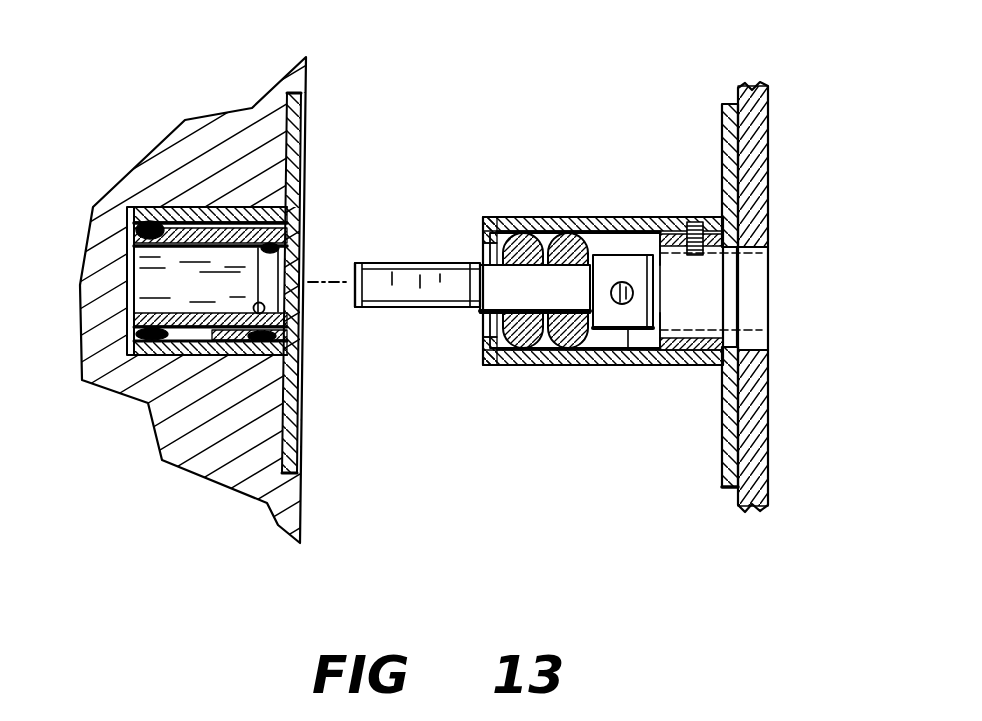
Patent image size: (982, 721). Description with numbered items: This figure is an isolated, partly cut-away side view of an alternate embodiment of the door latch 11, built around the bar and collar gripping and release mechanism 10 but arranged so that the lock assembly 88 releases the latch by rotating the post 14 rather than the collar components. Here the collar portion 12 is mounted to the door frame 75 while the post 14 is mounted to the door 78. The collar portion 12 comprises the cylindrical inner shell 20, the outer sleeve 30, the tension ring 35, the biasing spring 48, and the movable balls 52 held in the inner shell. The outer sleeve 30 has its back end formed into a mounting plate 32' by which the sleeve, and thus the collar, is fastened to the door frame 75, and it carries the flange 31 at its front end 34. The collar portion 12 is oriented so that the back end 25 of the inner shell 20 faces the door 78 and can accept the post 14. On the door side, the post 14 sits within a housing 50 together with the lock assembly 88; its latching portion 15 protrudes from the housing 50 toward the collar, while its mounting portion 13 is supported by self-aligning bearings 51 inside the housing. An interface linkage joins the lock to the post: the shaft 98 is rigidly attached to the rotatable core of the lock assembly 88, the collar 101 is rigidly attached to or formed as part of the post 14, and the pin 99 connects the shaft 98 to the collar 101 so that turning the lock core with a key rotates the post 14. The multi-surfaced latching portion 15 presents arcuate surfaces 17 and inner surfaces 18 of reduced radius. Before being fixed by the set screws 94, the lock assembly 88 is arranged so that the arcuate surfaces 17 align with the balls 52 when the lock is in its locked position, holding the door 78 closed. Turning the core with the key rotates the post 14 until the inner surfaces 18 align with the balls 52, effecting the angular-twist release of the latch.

The bar and collar gripping and release mechanism 10 is at (455, 105).
The door latch 11 is at (863, 143).
The collar portion 12 is at (193, 206).
The mounting portion 13 is at (558, 298).
The post 14 is at (470, 312).
The latching portion 15 is at (397, 310).
The arcuate surfaces 17 is at (401, 303).
The inner surfaces 18 is at (377, 283).
The cylindrical inner shell 20 is at (160, 262).
The back end 25 is at (303, 238).
The outer sleeve 30 is at (154, 315).
The flange 31 is at (128, 352).
The mounting plate 32' is at (321, 283).
The front end 34 is at (132, 268).
The tension ring 35 is at (268, 363).
The biasing spring 48 is at (152, 225).
The housing 50 is at (603, 276).
The self-aligning bearings 51 is at (530, 368).
The movable balls 52 is at (256, 304).
The door frame 75 is at (252, 108).
The door 78 is at (757, 143).
The lock assembly 88 is at (747, 287).
The set screws 94 is at (707, 190).
The shaft 98 is at (652, 368).
The pin 99 is at (630, 341).
The collar 101 is at (632, 368).